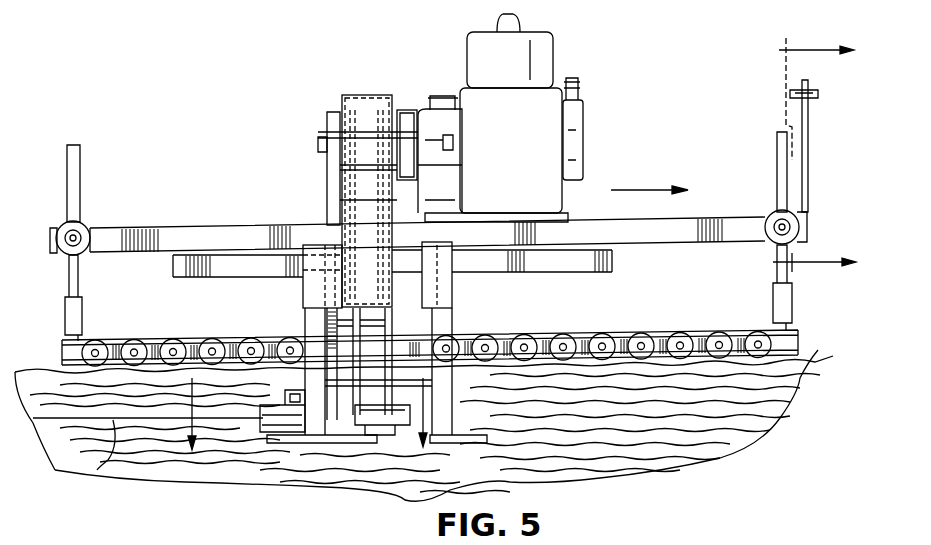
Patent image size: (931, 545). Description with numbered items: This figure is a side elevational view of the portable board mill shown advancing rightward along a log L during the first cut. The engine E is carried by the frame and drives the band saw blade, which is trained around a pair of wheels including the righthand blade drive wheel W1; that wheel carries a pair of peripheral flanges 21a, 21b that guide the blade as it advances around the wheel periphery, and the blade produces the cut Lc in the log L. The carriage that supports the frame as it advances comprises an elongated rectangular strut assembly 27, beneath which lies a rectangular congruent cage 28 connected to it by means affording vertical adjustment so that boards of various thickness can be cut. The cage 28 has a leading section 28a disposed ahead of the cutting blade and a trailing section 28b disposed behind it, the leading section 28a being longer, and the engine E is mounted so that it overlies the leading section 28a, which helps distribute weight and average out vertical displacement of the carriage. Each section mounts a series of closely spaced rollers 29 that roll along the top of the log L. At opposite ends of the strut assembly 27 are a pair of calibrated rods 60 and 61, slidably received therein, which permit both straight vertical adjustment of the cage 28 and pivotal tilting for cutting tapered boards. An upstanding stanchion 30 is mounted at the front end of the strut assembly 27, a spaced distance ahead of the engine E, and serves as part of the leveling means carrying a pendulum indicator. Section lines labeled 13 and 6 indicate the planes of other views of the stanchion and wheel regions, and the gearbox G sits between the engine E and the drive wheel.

The strut assembly 27 is at (587, 205).
The rod 61 is at (98, 184).
The stanchion 30 is at (808, 163).
The rod 60 is at (777, 173).
The section line 13 is at (814, 158).
The section line 6 is at (305, 428).
The cage 28 is at (515, 316).
The leading section 28a is at (622, 333).
The trailing section 28b is at (235, 335).
The rollers 29 is at (142, 335).
The peripheral flange 21a is at (392, 423).
The peripheral flange 21b is at (360, 422).
The engine E is at (513, 149).
The gearbox G is at (365, 92).
The log L is at (293, 462).
The cut Lc is at (97, 470).
The blade drive wheel W1 is at (365, 489).